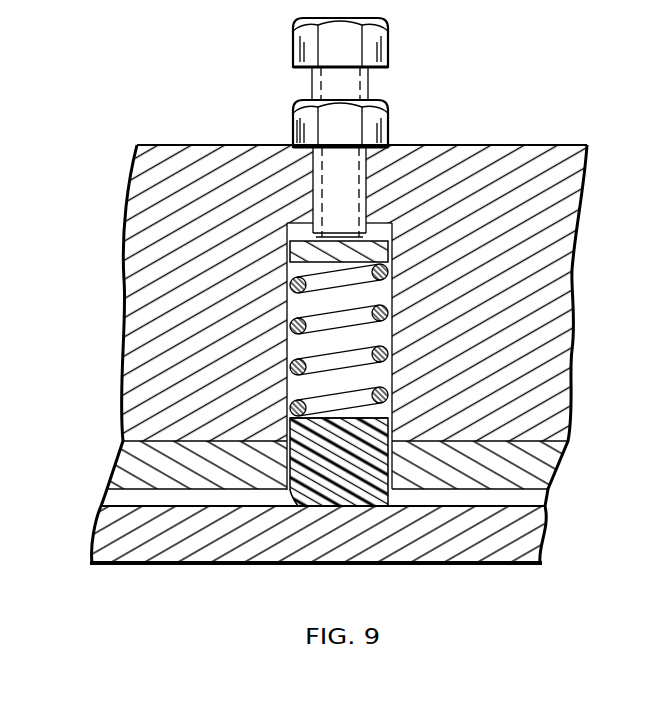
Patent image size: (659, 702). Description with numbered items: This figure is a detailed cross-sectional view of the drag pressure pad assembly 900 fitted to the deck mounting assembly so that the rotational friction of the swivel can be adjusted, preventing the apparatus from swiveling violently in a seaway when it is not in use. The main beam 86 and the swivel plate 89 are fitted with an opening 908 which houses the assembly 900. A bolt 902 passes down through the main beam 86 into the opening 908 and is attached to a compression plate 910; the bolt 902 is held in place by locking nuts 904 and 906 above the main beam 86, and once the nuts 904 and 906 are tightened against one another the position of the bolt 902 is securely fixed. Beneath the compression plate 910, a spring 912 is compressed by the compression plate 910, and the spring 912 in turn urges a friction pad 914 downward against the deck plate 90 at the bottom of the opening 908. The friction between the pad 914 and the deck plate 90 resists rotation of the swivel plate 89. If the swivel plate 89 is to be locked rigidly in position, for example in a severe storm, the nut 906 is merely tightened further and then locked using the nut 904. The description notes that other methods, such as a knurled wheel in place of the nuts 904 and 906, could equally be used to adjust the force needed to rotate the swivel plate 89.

The main beam 86 is at (543, 181).
The swivel plate 89 is at (560, 472).
The deck plate 90 is at (548, 525).
The drag pressure pad assembly 900 is at (390, 128).
The bolt 902 is at (362, 79).
The locking nut 904 is at (390, 45).
The locking nut 906 is at (307, 127).
The opening 908 is at (392, 327).
The compression plate 910 is at (390, 256).
The spring 912 is at (385, 400).
The friction pad 914 is at (368, 485).